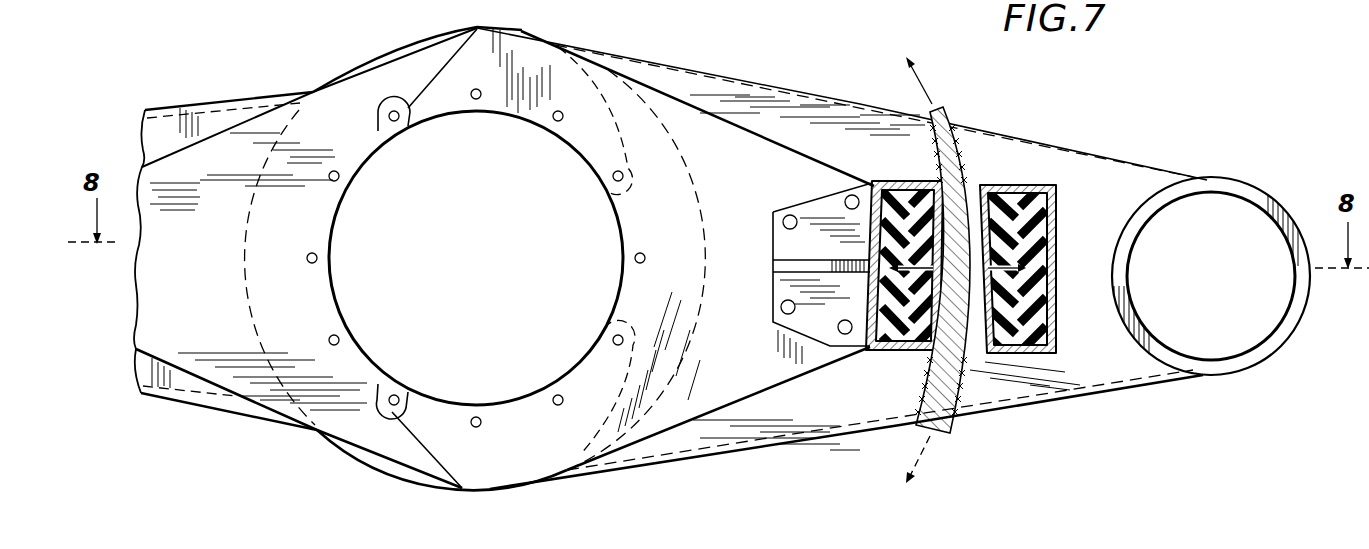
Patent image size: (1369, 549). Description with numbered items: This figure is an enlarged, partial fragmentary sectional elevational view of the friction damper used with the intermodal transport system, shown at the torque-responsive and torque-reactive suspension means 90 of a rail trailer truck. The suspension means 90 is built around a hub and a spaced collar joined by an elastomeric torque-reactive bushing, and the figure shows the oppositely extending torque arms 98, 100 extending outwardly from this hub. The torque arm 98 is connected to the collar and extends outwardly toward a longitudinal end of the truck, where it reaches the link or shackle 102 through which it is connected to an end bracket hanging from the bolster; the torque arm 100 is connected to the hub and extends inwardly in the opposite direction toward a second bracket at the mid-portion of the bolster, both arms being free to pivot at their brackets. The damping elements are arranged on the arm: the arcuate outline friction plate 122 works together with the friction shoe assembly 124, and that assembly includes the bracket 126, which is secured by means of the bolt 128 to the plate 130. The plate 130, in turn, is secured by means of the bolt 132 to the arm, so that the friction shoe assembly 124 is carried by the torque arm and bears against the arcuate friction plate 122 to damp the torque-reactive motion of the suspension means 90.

The torque-responsive and torque-reactive suspension means 90 is at (287, 74).
The torque arm 98 is at (833, 422).
The torque arm 100 is at (200, 106).
The link or shackle 102 is at (1245, 189).
The arcuate outline friction plate 122 is at (967, 388).
The friction shoe assembly 124 is at (1067, 190).
The bracket 126 is at (1058, 236).
The bolt 128 is at (845, 200).
The plate 130 is at (752, 379).
The bolt 132 is at (556, 114).